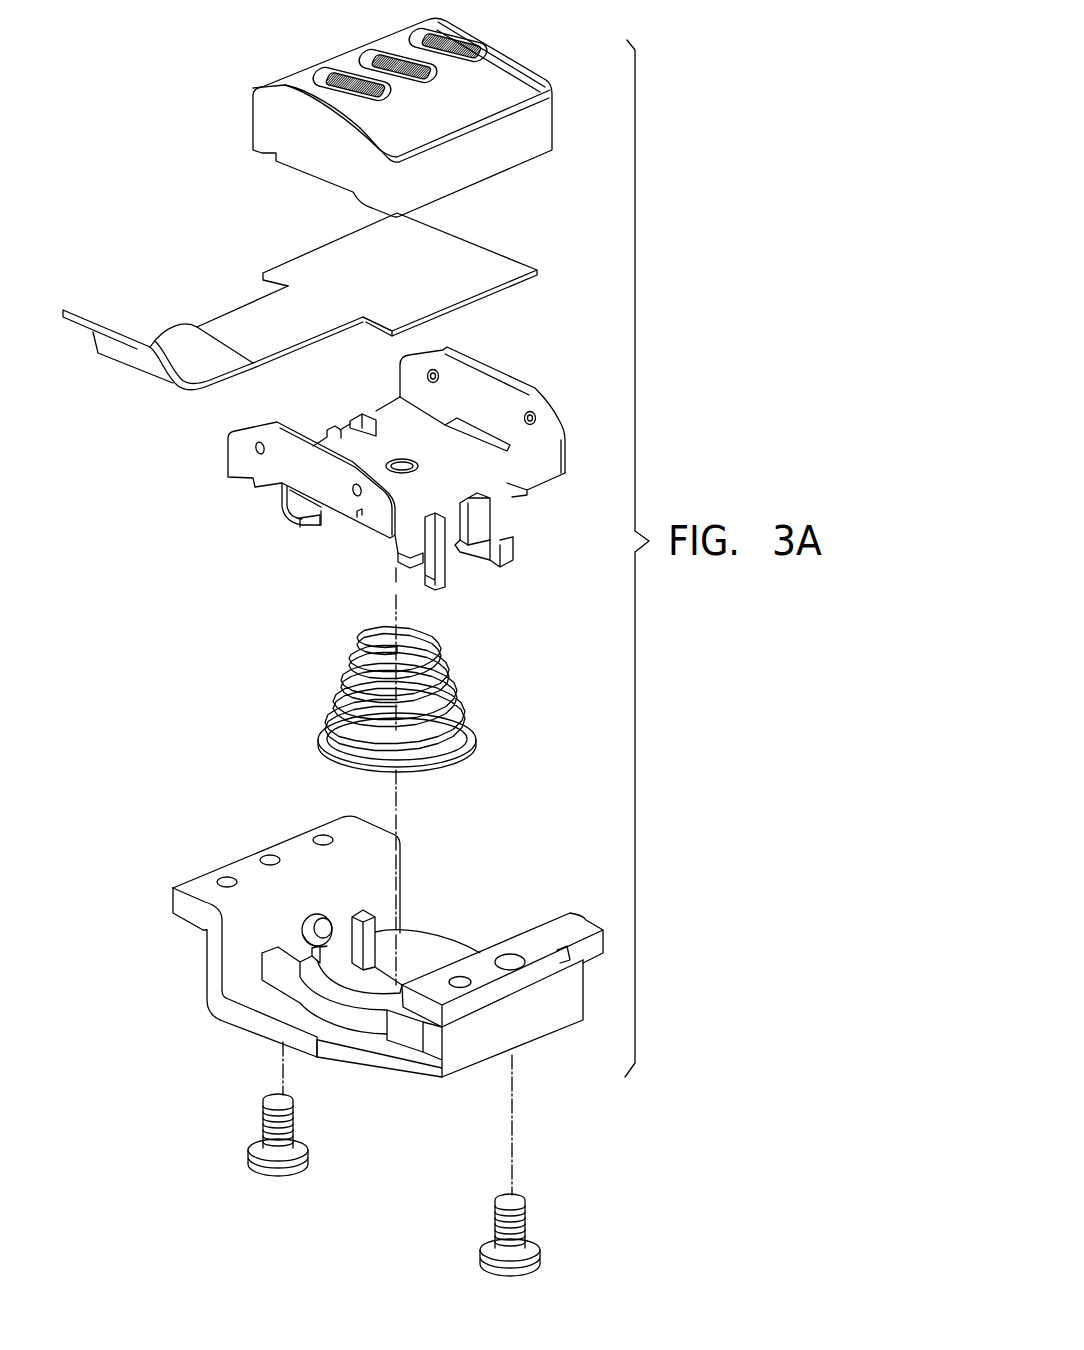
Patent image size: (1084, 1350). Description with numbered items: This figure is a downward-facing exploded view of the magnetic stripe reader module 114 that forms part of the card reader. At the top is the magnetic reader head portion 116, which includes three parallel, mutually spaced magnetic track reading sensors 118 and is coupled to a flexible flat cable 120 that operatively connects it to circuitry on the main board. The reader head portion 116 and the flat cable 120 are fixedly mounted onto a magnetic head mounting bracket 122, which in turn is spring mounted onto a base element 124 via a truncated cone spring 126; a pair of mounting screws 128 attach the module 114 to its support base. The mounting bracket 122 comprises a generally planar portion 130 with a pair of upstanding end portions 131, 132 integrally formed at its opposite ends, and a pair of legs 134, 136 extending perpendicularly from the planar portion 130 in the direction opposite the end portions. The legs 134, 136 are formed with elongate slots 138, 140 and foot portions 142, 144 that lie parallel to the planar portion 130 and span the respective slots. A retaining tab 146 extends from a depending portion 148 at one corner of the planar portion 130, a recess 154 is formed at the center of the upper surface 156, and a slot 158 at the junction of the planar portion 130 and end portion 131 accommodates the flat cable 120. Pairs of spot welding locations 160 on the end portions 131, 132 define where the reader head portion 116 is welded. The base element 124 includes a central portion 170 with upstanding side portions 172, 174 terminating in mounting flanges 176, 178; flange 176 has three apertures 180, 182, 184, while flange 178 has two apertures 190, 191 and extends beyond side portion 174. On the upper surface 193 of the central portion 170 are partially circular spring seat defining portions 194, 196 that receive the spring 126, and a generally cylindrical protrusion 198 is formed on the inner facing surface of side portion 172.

The magnetic stripe reader module 114 is at (680, 286).
The magnetic reader head portion 116 is at (512, 67).
The magnetic track reading sensors 118 is at (408, 40).
The flexible flat cable 120 is at (453, 245).
The magnetic head mounting bracket 122 is at (389, 471).
The base element 124 is at (362, 964).
The truncated cone spring 126 is at (347, 667).
The mounting screws 128 is at (300, 1135).
The generally planar portion 130 is at (352, 420).
The upstanding end portion 131 is at (237, 447).
The upstanding end portion 132 is at (487, 383).
The leg 134 is at (500, 550).
The leg 136 is at (290, 497).
The elongate slot 138 is at (470, 503).
The elongate slot 140 is at (330, 433).
The foot portion 142 is at (490, 537).
The foot portion 144 is at (320, 526).
The retaining tab 146 is at (412, 568).
The depending portion 148 is at (430, 575).
The recess 154 is at (403, 460).
The upper surface 156 is at (553, 481).
The slot 158 is at (353, 523).
The spot welding locations 160 is at (438, 372).
The central portion 170 is at (230, 1013).
The upstanding side portion 172 is at (213, 958).
The upstanding side portion 174 is at (433, 1047).
The mounting flange 176 is at (190, 913).
The mounting flange 178 is at (593, 950).
The aperture 180 is at (320, 840).
The aperture 182 is at (270, 860).
The aperture 184 is at (227, 882).
The aperture 190 is at (518, 965).
The aperture 191 is at (470, 984).
The upper surface 193 is at (325, 1035).
The spring seat defining portion 194 is at (283, 1040).
The spring seat defining portion 196 is at (450, 953).
The generally cylindrical protrusion 198 is at (330, 925).